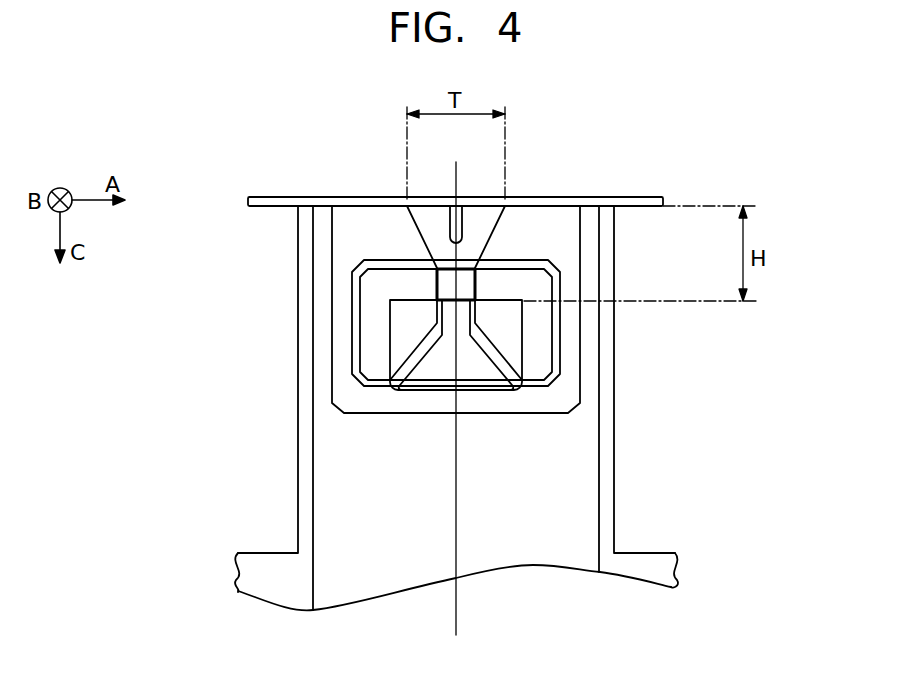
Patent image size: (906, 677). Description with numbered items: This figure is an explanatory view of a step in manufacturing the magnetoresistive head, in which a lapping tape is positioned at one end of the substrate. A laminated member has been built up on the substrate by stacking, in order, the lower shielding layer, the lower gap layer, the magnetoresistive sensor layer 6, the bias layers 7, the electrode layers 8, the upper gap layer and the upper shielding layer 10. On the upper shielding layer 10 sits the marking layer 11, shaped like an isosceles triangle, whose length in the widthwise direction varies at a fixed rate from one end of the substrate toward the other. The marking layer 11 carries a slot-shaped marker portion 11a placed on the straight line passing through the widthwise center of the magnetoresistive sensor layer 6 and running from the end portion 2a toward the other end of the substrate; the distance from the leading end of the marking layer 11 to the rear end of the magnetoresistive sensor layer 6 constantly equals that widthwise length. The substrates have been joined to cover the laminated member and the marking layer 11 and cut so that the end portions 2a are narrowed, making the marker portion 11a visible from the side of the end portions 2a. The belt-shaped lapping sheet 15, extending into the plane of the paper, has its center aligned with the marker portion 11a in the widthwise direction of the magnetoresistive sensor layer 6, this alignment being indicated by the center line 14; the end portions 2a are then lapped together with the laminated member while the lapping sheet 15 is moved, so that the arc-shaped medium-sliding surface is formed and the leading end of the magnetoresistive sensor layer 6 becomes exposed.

The end portion 2a is at (610, 448).
The magnetoresistive sensor layer 6 is at (437, 283).
The bias layers 7 is at (377, 388).
The electrode layers 8 is at (375, 347).
The upper shielding layer 10 is at (387, 405).
The marking layer 11 is at (430, 215).
The marker portion 11a is at (450, 233).
The center line 14 is at (458, 625).
The lapping sheet 15 is at (655, 197).